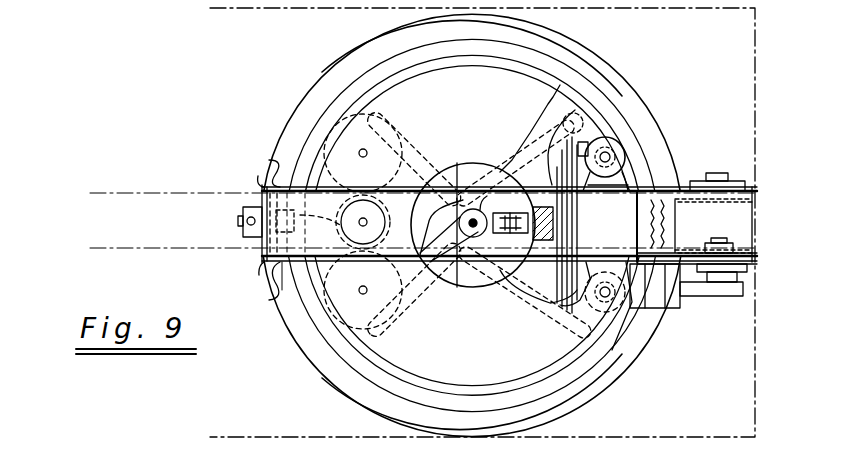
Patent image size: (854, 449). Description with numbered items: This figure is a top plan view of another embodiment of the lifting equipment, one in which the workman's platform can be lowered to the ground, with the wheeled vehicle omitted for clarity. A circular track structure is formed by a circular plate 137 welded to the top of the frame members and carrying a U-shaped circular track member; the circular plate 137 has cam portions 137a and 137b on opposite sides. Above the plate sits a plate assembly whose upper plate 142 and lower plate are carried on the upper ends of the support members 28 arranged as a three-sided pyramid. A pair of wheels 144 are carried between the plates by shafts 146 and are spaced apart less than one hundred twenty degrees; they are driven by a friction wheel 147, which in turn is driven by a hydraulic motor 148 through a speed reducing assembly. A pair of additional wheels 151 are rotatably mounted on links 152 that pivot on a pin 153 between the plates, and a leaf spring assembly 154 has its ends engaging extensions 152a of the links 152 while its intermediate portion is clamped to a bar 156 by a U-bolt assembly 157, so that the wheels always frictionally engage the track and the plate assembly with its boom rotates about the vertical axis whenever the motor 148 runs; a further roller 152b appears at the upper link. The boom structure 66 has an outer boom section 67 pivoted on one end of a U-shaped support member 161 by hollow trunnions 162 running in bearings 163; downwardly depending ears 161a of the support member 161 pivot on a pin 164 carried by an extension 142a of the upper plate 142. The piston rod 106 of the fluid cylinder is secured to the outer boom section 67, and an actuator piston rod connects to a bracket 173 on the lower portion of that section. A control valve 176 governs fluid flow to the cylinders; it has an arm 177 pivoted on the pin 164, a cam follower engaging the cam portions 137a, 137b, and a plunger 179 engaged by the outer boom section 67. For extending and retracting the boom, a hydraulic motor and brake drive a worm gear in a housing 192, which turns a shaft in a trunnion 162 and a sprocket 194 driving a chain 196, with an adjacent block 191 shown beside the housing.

The circular plate 137 is at (333, 390).
The cam portion 137a is at (578, 407).
The cam portion 137b is at (603, 78).
The upper plate 142 is at (492, 355).
The extension 142a is at (258, 185).
The wheels 144 is at (420, 108).
The shafts 146 is at (364, 285).
The wheel 147 is at (351, 222).
The hydraulic motor 148 is at (473, 214).
The additional wheels 151 is at (634, 160).
The links 152 is at (622, 186).
The extension 152a is at (624, 355).
The upper roller 152b is at (600, 150).
The pin 153 is at (650, 222).
The leaf spring assembly 154 is at (565, 134).
The bar 156 is at (498, 259).
The U-bolt assembly 157 is at (520, 156).
The U-shaped support member 161 is at (700, 193).
The ears 161a is at (272, 162).
The trunnions 162 is at (720, 173).
The bearings 163 is at (745, 183).
The pin 164 is at (291, 281).
The bracket 173 is at (500, 192).
The control valve 176 is at (240, 214).
The arm 177 is at (320, 230).
The plunger 179 is at (248, 226).
The block 191 is at (664, 306).
The housing 192 is at (745, 290).
The sprocket 194 is at (752, 250).
The chain 196 is at (698, 248).
The support members 28 is at (430, 292).
The boom structure 66 is at (152, 249).
The outer boom section 67 is at (757, 206).
The piston rod 106 is at (476, 245).